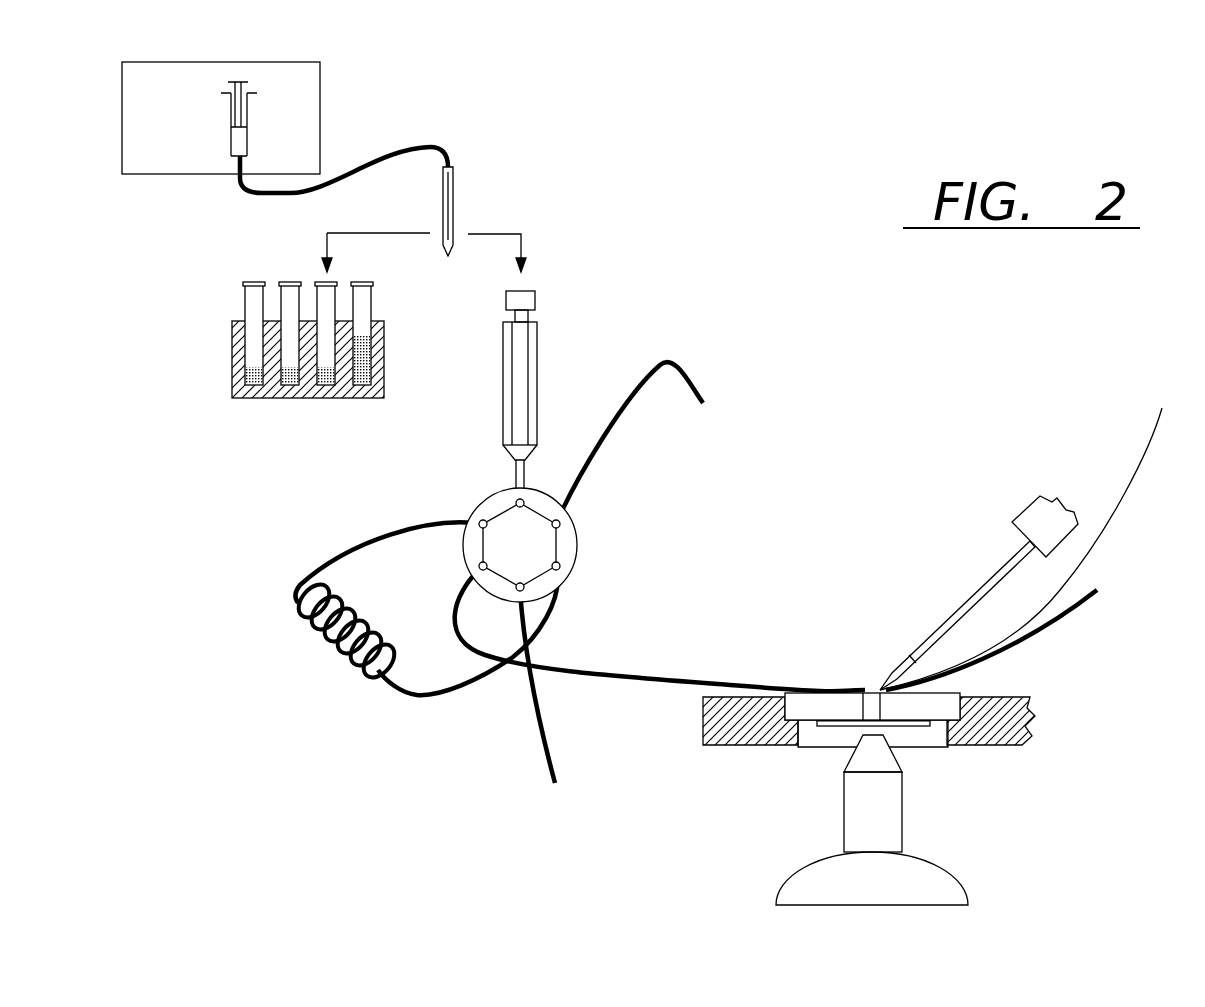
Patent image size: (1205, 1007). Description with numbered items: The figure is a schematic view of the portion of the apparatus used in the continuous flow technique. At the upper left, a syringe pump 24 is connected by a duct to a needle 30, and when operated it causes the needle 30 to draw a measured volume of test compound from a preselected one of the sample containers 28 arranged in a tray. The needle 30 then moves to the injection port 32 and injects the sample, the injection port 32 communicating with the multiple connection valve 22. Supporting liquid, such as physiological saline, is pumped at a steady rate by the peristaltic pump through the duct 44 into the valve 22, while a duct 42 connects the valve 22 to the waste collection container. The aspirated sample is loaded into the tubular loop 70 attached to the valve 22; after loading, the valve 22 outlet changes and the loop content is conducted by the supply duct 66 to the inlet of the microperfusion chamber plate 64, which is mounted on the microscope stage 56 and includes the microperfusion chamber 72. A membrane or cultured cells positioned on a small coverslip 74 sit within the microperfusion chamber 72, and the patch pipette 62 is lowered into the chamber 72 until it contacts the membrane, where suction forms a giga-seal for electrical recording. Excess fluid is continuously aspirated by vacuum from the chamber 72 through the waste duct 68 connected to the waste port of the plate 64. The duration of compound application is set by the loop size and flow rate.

The multiple connection valve 22 is at (482, 498).
The syringe pump 24 is at (180, 174).
The sample containers 28 is at (245, 300).
The needle 30 is at (453, 207).
The injection port 32 is at (537, 302).
The duct 42 is at (678, 367).
The duct 44 is at (542, 747).
The microscope stage 56 is at (1030, 738).
The patch pipette 62 is at (965, 590).
The microperfusion chamber plate 64 is at (960, 692).
The supply duct 66 is at (627, 670).
The waste duct 68 is at (1085, 607).
The tubular loop 70 is at (328, 648).
The microperfusion chamber 72 is at (866, 672).
The small coverslip 74 is at (1029, 532).